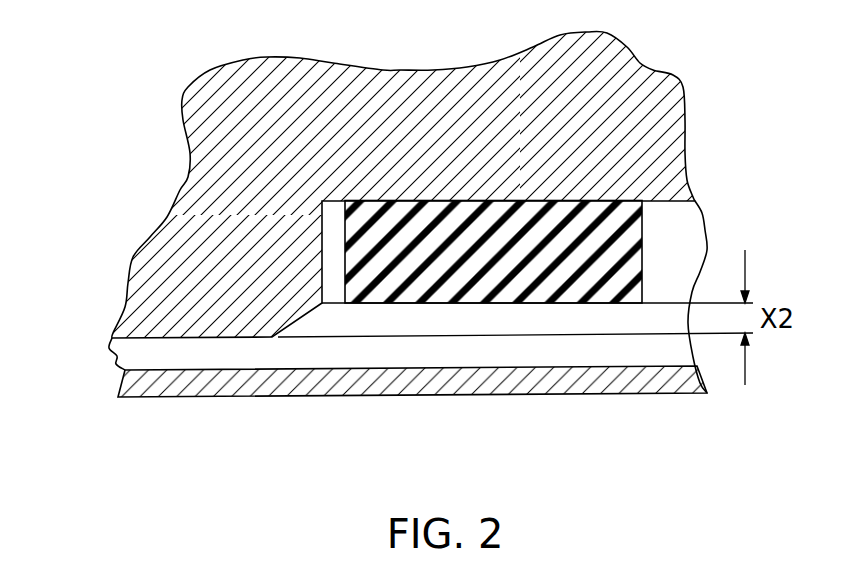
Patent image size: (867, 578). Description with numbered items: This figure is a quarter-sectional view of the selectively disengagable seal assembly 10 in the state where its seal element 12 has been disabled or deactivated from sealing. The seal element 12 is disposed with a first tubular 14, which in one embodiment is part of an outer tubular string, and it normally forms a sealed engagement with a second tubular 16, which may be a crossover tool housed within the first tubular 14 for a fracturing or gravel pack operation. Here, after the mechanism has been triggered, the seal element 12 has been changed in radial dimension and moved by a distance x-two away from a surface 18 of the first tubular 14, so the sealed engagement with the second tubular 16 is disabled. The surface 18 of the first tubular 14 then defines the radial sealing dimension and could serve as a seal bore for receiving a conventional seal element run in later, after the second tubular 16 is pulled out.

The seal assembly 10 is at (379, 220).
The seal element 12 is at (630, 228).
The first tubular 14 is at (228, 287).
The second tubular 16 is at (662, 380).
The surface 18 is at (152, 341).